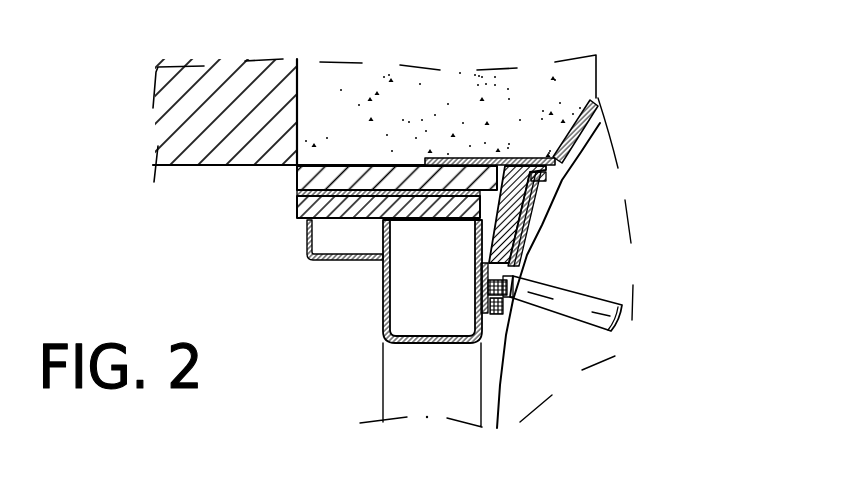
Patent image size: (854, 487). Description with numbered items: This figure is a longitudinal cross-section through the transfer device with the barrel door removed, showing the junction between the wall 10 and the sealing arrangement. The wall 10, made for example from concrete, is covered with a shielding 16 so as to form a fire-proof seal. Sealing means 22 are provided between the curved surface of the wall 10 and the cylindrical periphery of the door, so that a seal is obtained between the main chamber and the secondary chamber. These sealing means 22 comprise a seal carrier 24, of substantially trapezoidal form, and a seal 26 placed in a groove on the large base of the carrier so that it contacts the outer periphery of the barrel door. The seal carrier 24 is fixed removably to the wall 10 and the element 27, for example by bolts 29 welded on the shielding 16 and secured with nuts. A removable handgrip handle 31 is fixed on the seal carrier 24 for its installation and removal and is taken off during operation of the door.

The wall 10 is at (463, 87).
The shielding 16 is at (310, 172).
The sealing means 22 is at (532, 150).
The seal carrier 24 is at (552, 169).
The seal 26 is at (525, 226).
The element 27 is at (430, 344).
The bolts 29 is at (509, 318).
The handgrip handle 31 is at (585, 297).